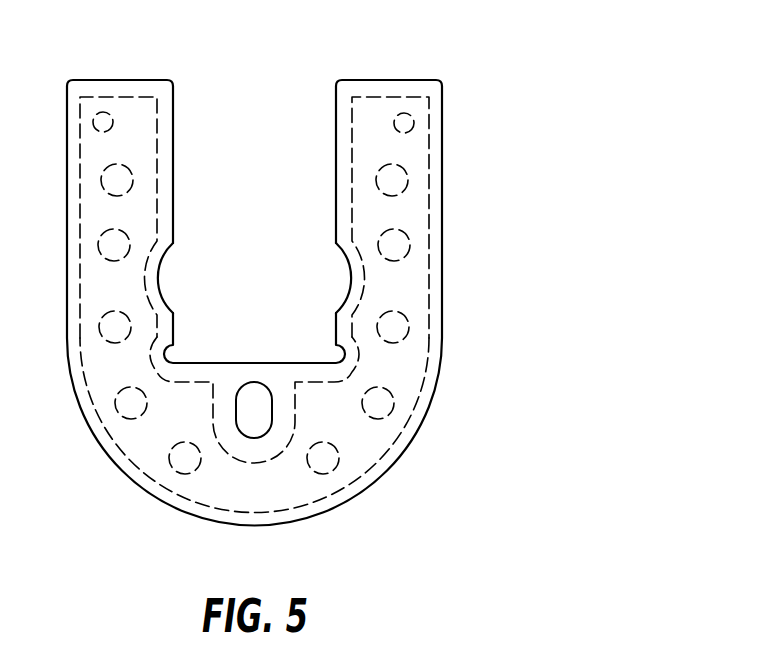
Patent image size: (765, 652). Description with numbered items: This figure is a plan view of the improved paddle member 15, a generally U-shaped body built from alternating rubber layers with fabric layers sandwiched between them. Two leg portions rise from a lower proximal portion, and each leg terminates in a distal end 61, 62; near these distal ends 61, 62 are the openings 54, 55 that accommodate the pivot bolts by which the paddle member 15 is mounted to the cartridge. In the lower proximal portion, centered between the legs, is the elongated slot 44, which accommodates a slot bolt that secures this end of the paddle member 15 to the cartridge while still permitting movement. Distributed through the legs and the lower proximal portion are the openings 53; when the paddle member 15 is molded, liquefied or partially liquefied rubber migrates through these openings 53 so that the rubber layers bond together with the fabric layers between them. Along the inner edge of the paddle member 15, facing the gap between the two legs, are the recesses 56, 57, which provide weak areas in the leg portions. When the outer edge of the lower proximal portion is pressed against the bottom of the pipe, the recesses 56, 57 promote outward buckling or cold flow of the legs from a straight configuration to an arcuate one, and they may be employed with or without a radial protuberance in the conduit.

The paddle member 15 is at (508, 273).
The elongated slot 44 is at (268, 410).
The openings 53 is at (400, 250).
The opening 54 is at (110, 115).
The opening 55 is at (400, 120).
The recess 56 is at (158, 277).
The recess 57 is at (349, 277).
The distal end 61 is at (99, 80).
The distal end 62 is at (409, 80).